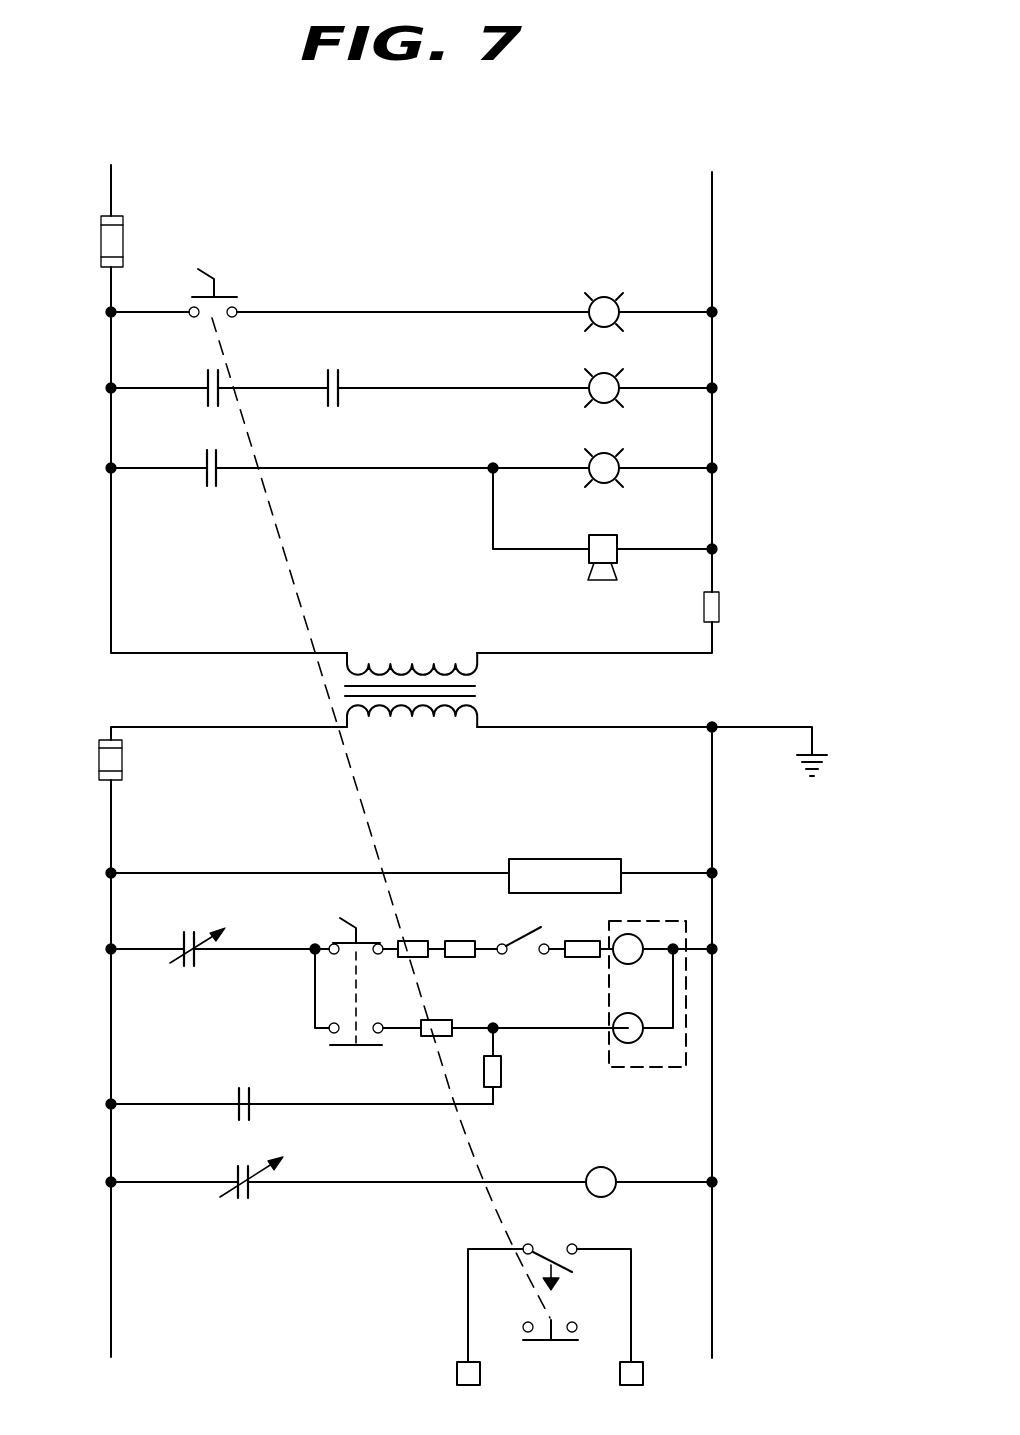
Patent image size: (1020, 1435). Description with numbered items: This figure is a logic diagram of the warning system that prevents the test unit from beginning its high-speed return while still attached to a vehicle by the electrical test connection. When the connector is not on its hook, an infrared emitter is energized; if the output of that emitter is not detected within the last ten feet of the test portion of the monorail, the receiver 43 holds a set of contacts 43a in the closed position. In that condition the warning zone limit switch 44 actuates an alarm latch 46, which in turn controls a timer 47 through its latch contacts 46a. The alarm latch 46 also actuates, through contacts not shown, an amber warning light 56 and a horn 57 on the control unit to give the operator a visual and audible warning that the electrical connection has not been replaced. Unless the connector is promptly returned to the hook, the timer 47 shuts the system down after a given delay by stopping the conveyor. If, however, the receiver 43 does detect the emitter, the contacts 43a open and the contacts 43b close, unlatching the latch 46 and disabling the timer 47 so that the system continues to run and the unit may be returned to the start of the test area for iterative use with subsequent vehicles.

The receiver 43 is at (561, 858).
The contacts 43a is at (188, 970).
The contacts 43b is at (245, 1090).
The warning zone limit switch 44 is at (523, 962).
The alarm latch 46 is at (695, 992).
The latch contacts 46a is at (244, 1200).
The timer 47 is at (601, 1166).
The amber warning light 56 is at (603, 452).
The horn 57 is at (597, 575).